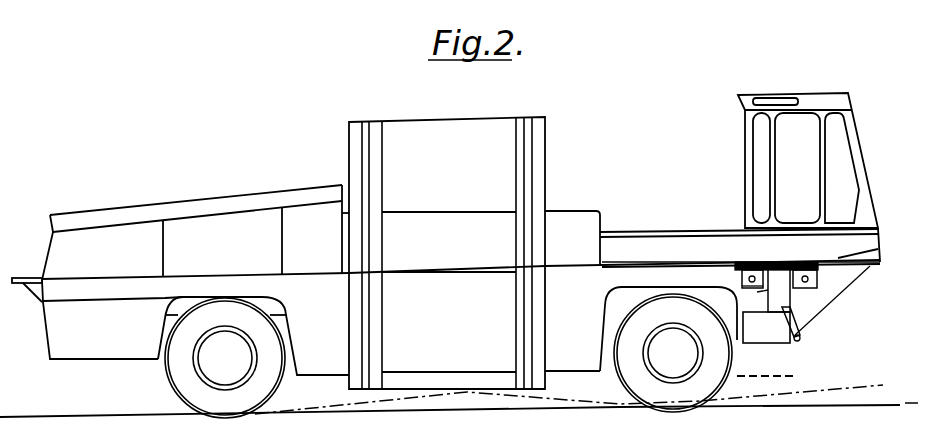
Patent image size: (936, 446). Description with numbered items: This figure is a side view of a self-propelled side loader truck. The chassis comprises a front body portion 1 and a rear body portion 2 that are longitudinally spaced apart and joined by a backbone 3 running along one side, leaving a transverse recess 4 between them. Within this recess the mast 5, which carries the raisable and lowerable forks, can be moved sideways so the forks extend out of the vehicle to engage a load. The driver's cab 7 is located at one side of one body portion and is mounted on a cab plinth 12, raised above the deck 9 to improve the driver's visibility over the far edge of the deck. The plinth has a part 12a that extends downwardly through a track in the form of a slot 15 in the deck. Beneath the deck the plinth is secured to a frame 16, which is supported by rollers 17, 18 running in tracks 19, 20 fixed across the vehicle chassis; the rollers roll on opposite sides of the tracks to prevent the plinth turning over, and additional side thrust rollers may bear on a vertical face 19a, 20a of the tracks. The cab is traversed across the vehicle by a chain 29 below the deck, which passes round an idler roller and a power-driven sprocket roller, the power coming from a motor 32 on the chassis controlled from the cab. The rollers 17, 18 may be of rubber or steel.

The front body portion 1 is at (446, 301).
The rear body portion 2 is at (712, 311).
The backbone 3 is at (447, 253).
The transverse recess 4 is at (449, 322).
The mast 5 is at (538, 177).
The driver's cab 7 is at (838, 172).
The deck 9 is at (813, 262).
The cab plinth 12 is at (865, 243).
The plinth part 12a is at (775, 262).
The slot 15 is at (768, 268).
The frame 16 is at (742, 273).
The roller 17 is at (743, 286).
The roller 18 is at (815, 268).
The track 19 is at (757, 292).
The vertical face 19a is at (747, 290).
The track 20 is at (752, 343).
The vertical face 20a is at (800, 340).
The chain 29 is at (805, 297).
The motor 32 is at (780, 300).